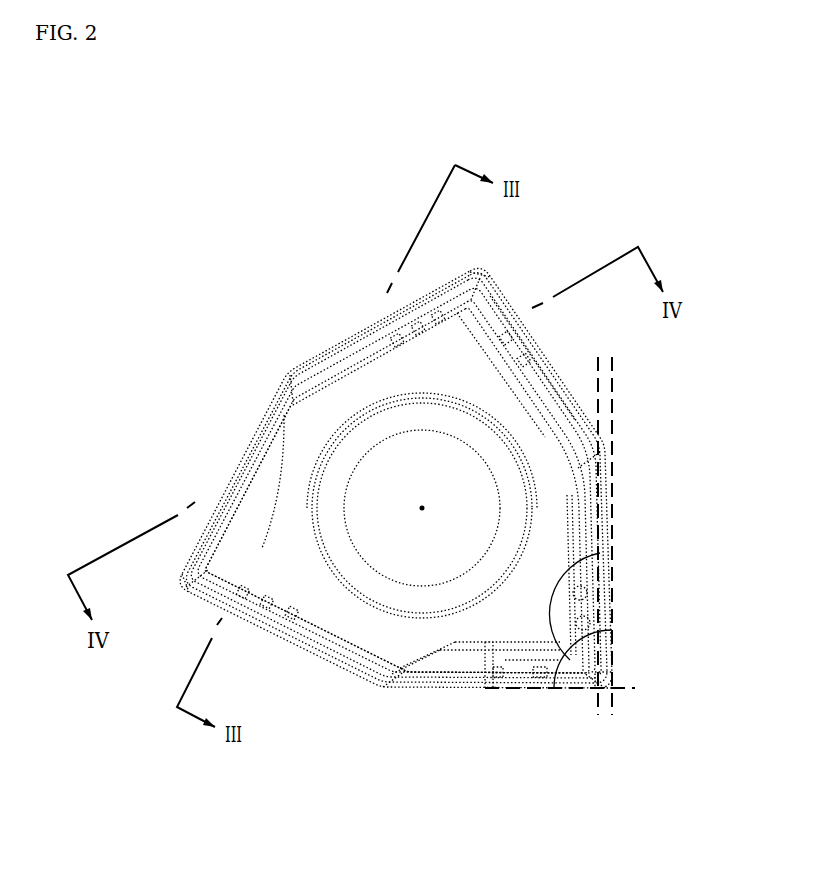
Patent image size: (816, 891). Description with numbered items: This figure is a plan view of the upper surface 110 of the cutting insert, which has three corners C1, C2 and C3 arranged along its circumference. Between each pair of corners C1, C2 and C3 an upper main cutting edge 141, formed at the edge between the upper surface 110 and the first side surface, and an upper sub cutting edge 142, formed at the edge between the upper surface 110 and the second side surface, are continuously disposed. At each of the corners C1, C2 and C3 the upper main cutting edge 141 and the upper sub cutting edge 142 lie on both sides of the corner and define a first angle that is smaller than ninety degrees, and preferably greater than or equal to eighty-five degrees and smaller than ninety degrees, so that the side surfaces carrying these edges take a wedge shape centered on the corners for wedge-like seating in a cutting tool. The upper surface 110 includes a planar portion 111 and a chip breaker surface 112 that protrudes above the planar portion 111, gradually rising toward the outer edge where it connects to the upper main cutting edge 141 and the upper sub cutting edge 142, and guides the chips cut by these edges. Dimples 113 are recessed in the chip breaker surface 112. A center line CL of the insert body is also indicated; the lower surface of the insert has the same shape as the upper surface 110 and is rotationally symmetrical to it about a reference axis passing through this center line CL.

The upper surface 110 is at (337, 410).
The planar portion 111 is at (315, 443).
The chip breaker surface 112 is at (253, 467).
The dimple 113 is at (237, 500).
The upper main cutting edge 141 is at (377, 317).
The upper sub cutting edge 142 is at (207, 507).
The corner C1 is at (613, 692).
The corner C2 is at (484, 262).
The corner C3 is at (177, 582).
The center line CL is at (422, 508).